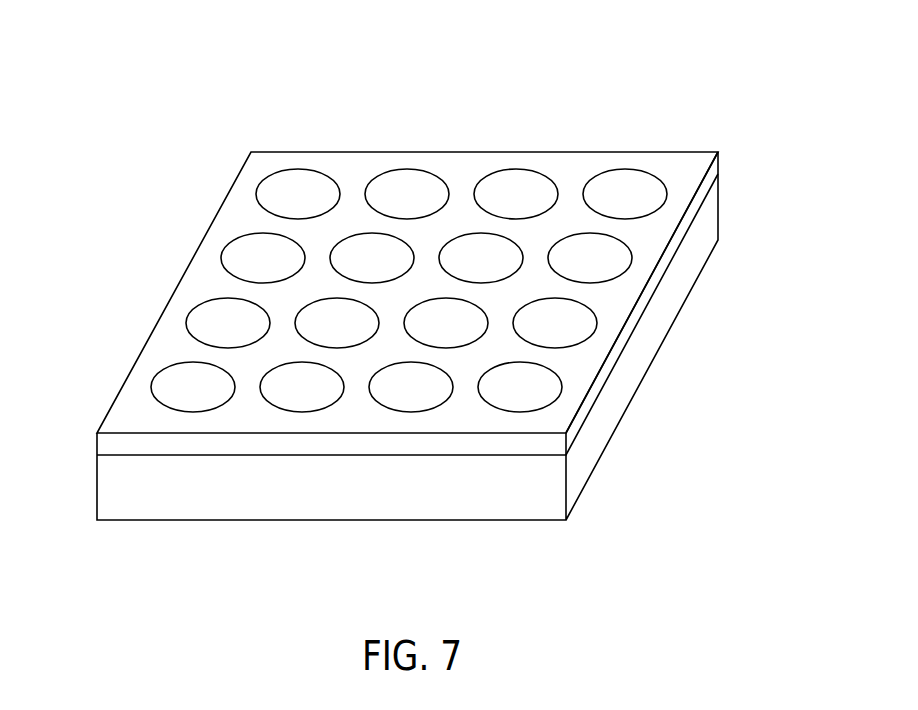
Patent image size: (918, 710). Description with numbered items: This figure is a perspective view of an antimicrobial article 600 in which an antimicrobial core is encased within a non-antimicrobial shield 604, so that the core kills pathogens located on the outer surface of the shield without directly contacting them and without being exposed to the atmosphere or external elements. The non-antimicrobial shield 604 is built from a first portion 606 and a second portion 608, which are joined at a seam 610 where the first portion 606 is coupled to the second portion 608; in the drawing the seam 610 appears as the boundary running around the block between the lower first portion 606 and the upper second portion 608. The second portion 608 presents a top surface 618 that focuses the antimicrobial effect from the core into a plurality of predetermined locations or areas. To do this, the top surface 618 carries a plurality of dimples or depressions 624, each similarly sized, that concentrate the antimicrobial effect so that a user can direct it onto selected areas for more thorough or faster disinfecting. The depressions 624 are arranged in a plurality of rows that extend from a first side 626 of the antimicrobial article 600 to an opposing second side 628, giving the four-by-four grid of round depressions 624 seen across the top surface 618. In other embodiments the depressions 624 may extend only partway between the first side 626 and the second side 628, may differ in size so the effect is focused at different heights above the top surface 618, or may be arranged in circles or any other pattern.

The antimicrobial article 600 is at (237, 63).
The non-antimicrobial shield 604 is at (785, 143).
The first portion 606 is at (491, 500).
The second portion 608 is at (120, 446).
The seam 610 is at (690, 225).
The top surface 618 is at (688, 162).
The depressions 624 is at (483, 180).
The first side 626 is at (157, 275).
The second side 628 is at (675, 363).